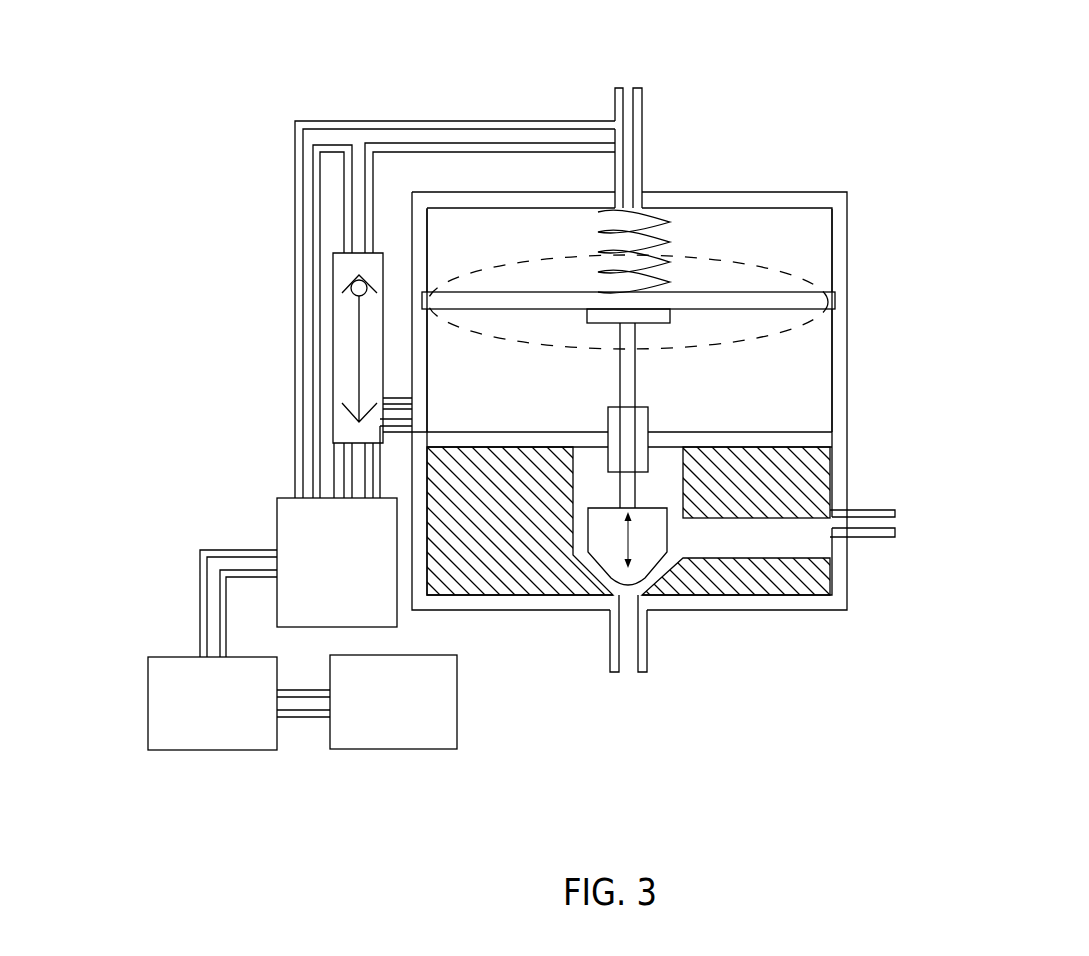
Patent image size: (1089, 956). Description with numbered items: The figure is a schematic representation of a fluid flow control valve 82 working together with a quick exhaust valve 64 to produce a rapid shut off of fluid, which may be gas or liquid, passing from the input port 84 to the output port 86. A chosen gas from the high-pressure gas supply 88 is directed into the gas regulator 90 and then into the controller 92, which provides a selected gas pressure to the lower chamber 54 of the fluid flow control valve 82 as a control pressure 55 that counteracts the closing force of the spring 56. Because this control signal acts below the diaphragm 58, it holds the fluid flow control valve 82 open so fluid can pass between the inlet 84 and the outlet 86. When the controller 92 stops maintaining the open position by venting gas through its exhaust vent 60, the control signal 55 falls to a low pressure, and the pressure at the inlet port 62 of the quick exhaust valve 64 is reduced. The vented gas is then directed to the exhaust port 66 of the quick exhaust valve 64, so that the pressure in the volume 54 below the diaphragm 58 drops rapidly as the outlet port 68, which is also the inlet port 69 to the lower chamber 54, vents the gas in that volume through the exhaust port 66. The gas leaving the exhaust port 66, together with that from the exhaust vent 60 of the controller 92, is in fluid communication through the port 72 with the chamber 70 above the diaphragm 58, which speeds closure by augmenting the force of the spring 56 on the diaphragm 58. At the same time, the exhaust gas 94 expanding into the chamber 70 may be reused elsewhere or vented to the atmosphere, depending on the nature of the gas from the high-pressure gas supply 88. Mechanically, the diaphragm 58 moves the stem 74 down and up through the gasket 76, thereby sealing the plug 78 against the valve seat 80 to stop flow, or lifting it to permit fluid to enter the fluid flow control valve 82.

The lower chamber 54 is at (748, 389).
The control pressure 55 is at (357, 485).
The spring 56 is at (678, 233).
The diaphragm 58 is at (741, 288).
The exhaust vent 60 is at (293, 363).
The inlet port 62 is at (340, 465).
The quick exhaust valve 64 is at (331, 273).
The exhaust port 66 is at (379, 188).
The outlet port 68 is at (397, 436).
The inlet port 69 is at (399, 392).
The chamber 70 is at (478, 254).
The port 72 is at (645, 178).
The stem 74 is at (617, 379).
The gasket 76 is at (658, 421).
The plug 78 is at (661, 571).
The valve seat 80 is at (593, 570).
The fluid flow control valve 82 is at (867, 361).
The input port 84 is at (628, 688).
The output port 86 is at (903, 523).
The high-pressure gas supply 88 is at (428, 742).
The gas regulator 90 is at (222, 742).
The controller 92 is at (371, 586).
The exhaust gas 94 is at (629, 92).